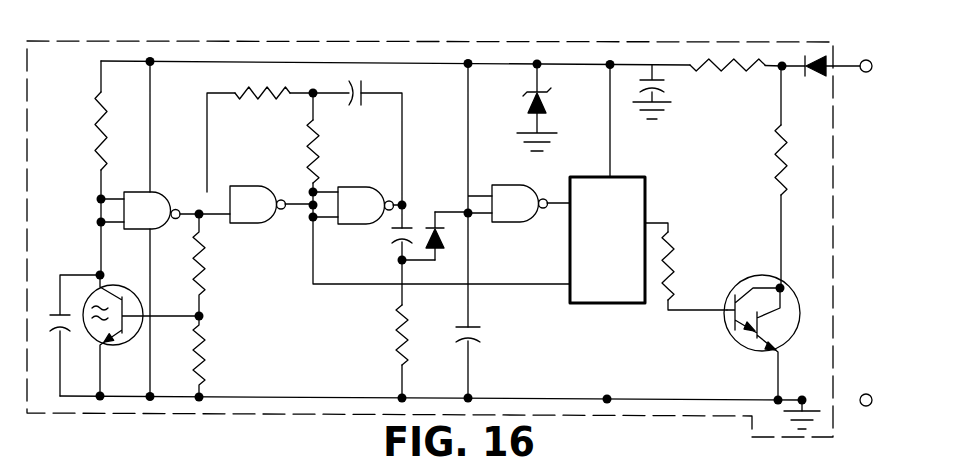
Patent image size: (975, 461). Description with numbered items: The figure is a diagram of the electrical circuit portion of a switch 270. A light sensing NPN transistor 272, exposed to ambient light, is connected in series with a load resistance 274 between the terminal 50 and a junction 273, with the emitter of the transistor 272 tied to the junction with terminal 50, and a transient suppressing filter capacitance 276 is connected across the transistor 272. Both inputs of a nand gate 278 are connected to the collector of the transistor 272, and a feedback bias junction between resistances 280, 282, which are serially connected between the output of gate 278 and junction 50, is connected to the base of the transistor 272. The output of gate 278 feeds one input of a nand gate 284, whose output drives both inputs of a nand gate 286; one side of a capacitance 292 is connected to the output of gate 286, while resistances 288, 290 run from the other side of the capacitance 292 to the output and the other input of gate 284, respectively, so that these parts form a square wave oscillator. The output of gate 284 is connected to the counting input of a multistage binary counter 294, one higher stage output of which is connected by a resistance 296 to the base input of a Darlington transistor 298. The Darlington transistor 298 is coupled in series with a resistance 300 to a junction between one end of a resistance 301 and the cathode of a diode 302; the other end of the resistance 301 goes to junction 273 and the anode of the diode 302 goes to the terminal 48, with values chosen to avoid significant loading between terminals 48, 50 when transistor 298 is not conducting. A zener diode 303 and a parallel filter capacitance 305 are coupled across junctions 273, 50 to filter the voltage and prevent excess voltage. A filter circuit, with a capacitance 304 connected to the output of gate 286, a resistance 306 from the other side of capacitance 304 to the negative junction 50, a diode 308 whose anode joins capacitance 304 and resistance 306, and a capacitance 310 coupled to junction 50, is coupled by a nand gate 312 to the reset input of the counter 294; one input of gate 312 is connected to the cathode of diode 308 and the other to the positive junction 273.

The switch 270 is at (595, 44).
The junction 273 is at (492, 62).
The load resistance 274 is at (96, 137).
The transient suppressing filter capacitance 276 is at (57, 312).
The nand gate 278 is at (162, 194).
The light sensing NPN transistor 272 is at (128, 332).
The resistance 280 is at (203, 249).
The resistance 282 is at (204, 355).
The nand gate 284 is at (258, 196).
The nand gate 286 is at (376, 190).
The resistance 288 is at (310, 140).
The resistance 290 is at (246, 92).
The capacitance 292 is at (366, 88).
The multistage binary counter 294 is at (638, 177).
The resistance 296 is at (674, 250).
The Darlington transistor 298 is at (742, 340).
The resistance 300 is at (775, 143).
The resistance 301 is at (712, 60).
The diode 302 is at (820, 58).
The zener diode 303 is at (527, 97).
The capacitance 304 is at (392, 238).
The filter capacitance 305 is at (668, 84).
The resistance 306 is at (395, 348).
The diode 308 is at (438, 222).
The capacitance 310 is at (481, 332).
The nand gate 312 is at (520, 212).
The terminal 48 is at (866, 58).
The terminal 50 is at (866, 394).